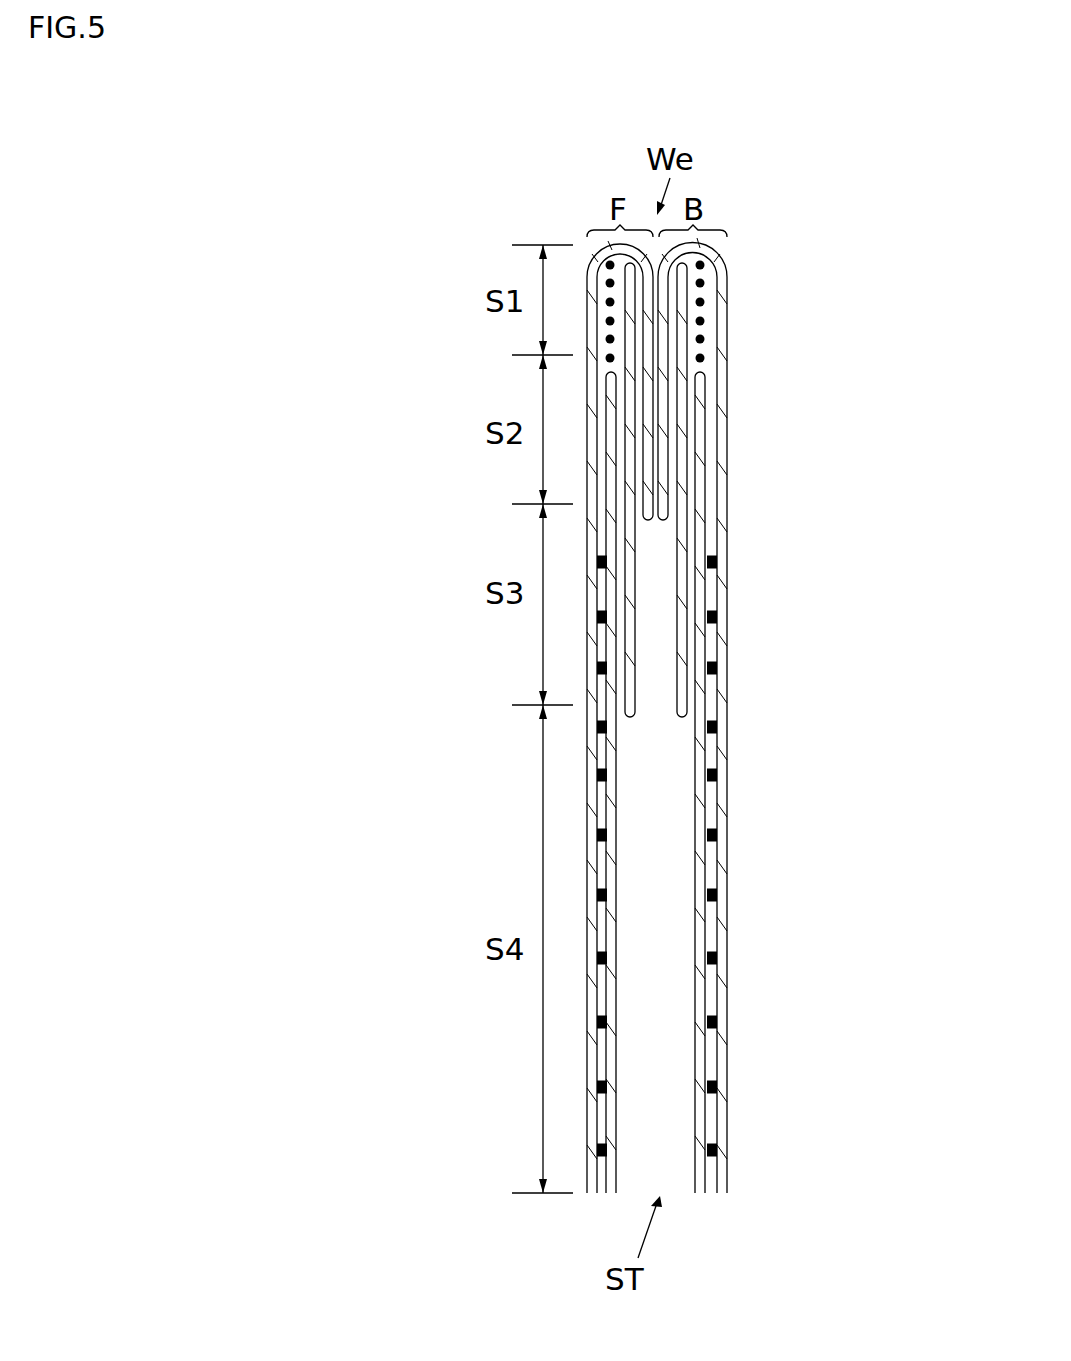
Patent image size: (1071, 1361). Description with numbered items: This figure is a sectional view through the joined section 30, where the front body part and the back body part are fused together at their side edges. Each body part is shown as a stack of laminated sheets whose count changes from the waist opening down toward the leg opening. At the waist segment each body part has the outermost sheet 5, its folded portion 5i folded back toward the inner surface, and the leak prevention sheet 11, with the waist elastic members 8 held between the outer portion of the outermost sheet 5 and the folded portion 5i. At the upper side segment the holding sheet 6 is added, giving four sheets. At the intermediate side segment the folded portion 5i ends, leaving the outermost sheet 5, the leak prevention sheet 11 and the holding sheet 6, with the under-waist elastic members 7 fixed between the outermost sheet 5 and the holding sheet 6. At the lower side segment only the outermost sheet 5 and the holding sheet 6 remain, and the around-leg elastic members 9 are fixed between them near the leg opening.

The outermost sheet 5 is at (720, 601).
The folded portion 5i is at (640, 366).
The holding sheet 6 is at (722, 498).
The under-waist elastic members 7 is at (713, 729).
The waist elastic members 8 is at (703, 266).
The around-leg elastic members 9 is at (720, 1148).
The leak prevention sheet 11 is at (681, 428).
The joined section 30 is at (860, 305).